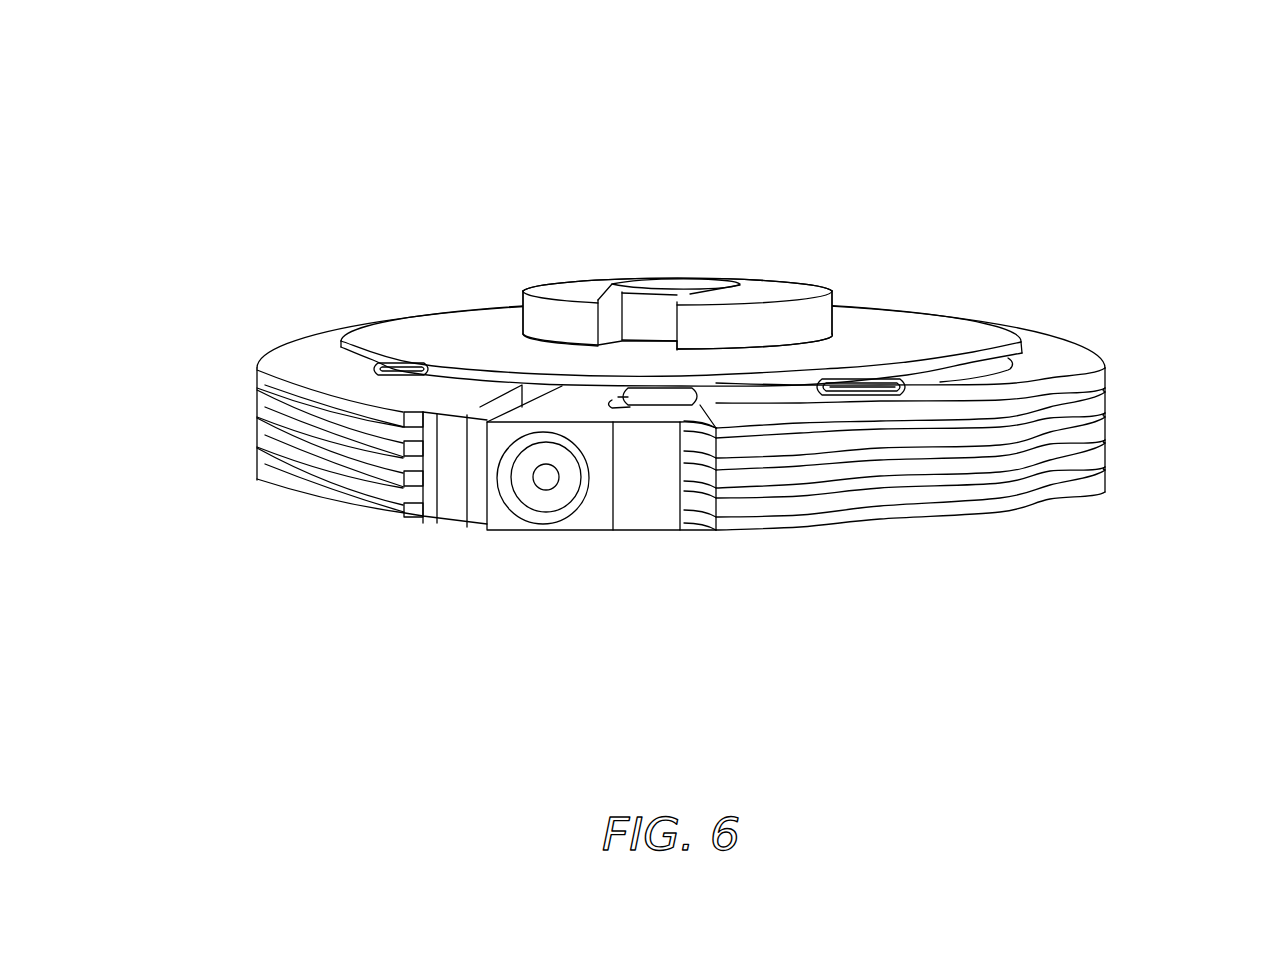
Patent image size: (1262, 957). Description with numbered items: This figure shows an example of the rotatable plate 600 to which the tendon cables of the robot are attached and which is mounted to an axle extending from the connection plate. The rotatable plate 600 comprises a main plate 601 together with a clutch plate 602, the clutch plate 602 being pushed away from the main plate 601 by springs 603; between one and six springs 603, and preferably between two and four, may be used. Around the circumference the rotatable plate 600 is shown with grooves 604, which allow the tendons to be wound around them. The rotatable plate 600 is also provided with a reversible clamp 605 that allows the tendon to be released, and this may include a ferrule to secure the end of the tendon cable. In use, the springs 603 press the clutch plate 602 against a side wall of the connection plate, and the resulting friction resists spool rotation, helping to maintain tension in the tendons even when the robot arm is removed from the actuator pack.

The rotatable plate 600 is at (188, 157).
The main plate 601 is at (299, 368).
The clutch plate 602 is at (446, 343).
The springs 603 is at (885, 400).
The grooves 604 is at (1098, 447).
The reversible clamp 605 is at (600, 508).